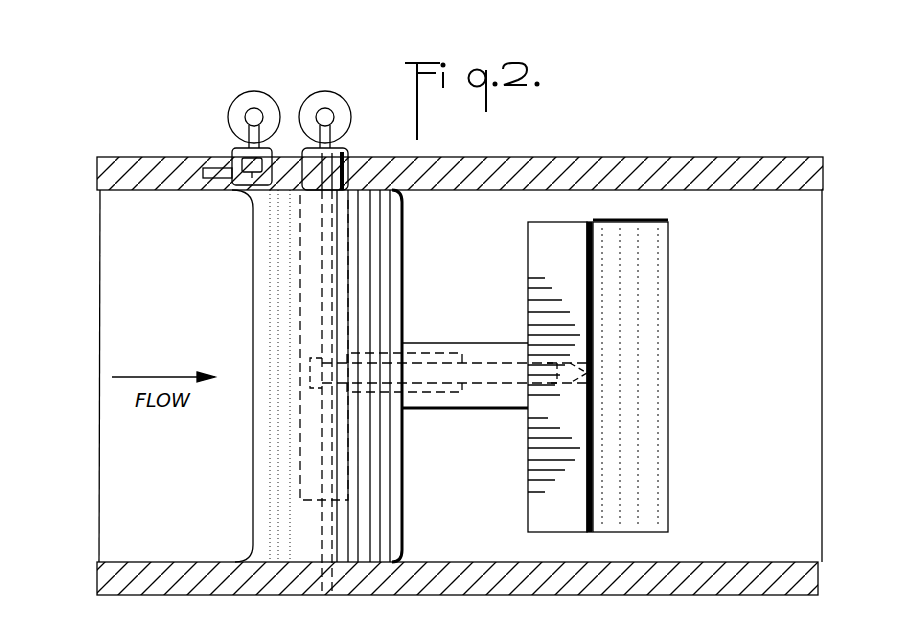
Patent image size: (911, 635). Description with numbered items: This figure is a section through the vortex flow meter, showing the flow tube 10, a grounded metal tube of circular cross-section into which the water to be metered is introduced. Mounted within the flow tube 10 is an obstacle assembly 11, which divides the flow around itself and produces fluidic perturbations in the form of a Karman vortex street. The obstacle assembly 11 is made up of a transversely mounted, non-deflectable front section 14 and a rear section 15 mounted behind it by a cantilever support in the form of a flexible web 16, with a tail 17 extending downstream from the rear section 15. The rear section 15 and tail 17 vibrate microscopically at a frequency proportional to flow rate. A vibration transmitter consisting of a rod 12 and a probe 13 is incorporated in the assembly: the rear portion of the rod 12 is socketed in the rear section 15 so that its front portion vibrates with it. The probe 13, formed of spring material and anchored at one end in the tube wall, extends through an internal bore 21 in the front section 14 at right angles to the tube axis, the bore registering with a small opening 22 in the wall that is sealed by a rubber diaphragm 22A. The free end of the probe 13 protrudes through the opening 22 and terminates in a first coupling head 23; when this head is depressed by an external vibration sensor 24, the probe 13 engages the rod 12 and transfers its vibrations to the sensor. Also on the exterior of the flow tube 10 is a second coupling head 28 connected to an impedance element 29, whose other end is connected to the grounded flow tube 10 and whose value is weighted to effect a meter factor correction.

The flow tube 10 is at (711, 157).
The obstacle assembly 11 is at (406, 263).
The rod 12 is at (442, 352).
The probe 13 is at (323, 282).
The front section 14 is at (393, 480).
The rear section 15 is at (545, 227).
The flexible web 16 is at (492, 343).
The tail 17 is at (658, 270).
The internal bore 21 is at (307, 252).
The opening 22 is at (347, 167).
The rubber diaphragm 22A is at (303, 148).
The first coupling head 23 is at (325, 108).
The external vibration sensor 24 is at (331, 110).
The second coupling head 28 is at (245, 118).
The impedance element 29 is at (245, 165).